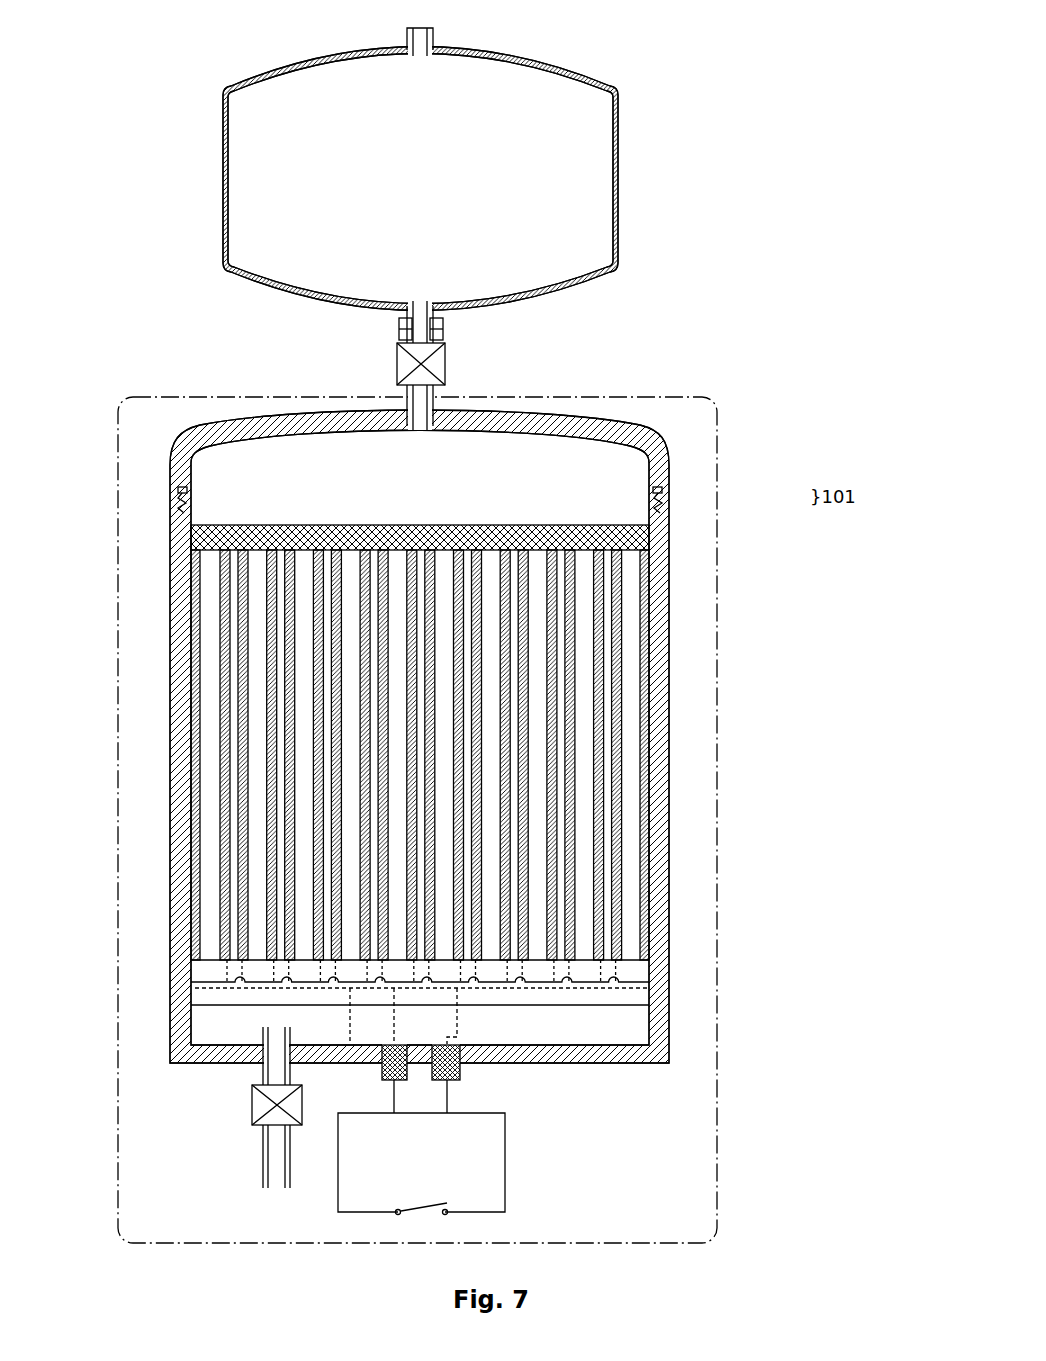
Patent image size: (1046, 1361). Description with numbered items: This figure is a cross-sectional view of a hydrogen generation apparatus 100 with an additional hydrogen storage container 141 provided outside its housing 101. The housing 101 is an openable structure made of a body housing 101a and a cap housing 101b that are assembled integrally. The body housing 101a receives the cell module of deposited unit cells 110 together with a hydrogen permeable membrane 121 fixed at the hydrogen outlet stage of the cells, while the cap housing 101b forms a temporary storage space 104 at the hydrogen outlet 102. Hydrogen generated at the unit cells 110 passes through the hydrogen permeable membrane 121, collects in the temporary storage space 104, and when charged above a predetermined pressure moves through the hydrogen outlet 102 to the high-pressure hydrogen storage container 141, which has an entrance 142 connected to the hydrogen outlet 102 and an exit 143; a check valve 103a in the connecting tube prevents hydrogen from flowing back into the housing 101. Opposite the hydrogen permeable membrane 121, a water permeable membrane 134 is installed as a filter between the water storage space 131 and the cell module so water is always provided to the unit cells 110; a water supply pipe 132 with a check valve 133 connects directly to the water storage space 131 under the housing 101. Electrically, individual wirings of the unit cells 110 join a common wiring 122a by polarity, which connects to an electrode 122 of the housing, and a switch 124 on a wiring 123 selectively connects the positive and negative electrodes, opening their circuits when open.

The hydrogen generation apparatus 100 is at (668, 428).
The housing 101 is at (667, 698).
The body housing 101a is at (663, 567).
The cap housing 101b is at (668, 470).
The hydrogen outlet 102 is at (435, 403).
The check valve 103a is at (445, 364).
The temporary storage space 104 is at (573, 460).
The unit cells 110 is at (540, 964).
The hydrogen permeable membrane 121 is at (170, 532).
The electrode of the housing 122 is at (400, 1082).
The common wiring 122a is at (308, 988).
The wiring 123 is at (338, 1180).
The switch 124 is at (427, 1198).
The water storage space 131 is at (500, 1027).
The water supply pipe 132 is at (262, 1148).
The check valve 133 is at (252, 1102).
The water permeable membrane 134 is at (200, 997).
The hydrogen storage container 141 is at (618, 180).
The entrance 142 is at (400, 312).
The exit 143 is at (433, 36).